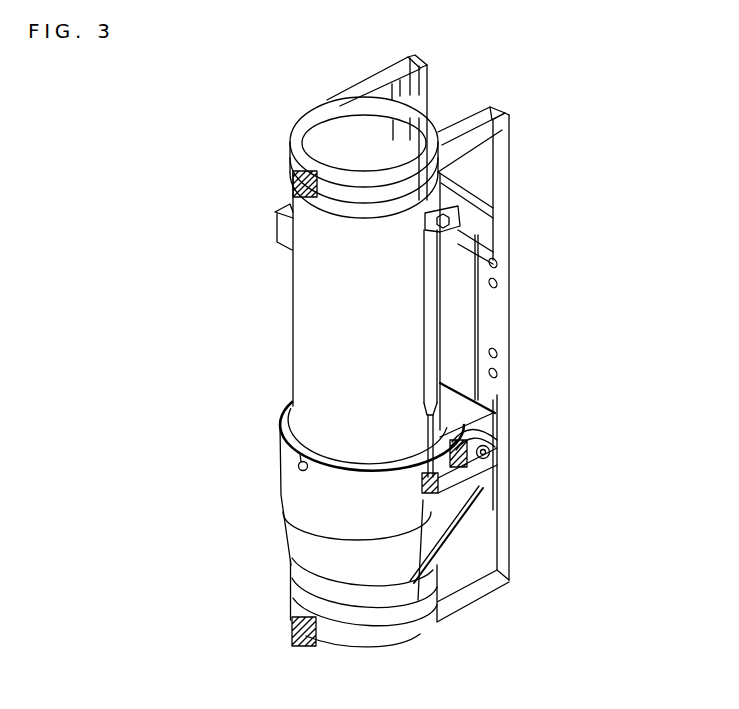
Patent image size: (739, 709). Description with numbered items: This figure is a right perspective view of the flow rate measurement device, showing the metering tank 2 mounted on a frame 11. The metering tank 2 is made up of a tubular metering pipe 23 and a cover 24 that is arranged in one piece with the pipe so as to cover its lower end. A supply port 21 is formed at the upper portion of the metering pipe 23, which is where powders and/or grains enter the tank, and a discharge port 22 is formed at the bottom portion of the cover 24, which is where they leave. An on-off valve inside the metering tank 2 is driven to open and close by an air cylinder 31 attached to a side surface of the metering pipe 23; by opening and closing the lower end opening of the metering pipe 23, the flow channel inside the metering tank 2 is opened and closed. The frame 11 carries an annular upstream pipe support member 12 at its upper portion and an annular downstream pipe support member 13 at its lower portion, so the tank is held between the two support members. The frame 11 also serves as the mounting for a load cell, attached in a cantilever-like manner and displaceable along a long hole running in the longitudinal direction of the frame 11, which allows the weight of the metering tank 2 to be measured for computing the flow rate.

The metering tank 2 is at (203, 403).
The frame 11 is at (503, 293).
The upstream pipe support member 12 is at (302, 108).
The downstream pipe support member 13 is at (407, 632).
The supply port 21 is at (365, 165).
The discharge port 22 is at (325, 600).
The metering pipe 23 is at (316, 306).
The cover 24 is at (303, 507).
The air cylinder 31 is at (433, 345).